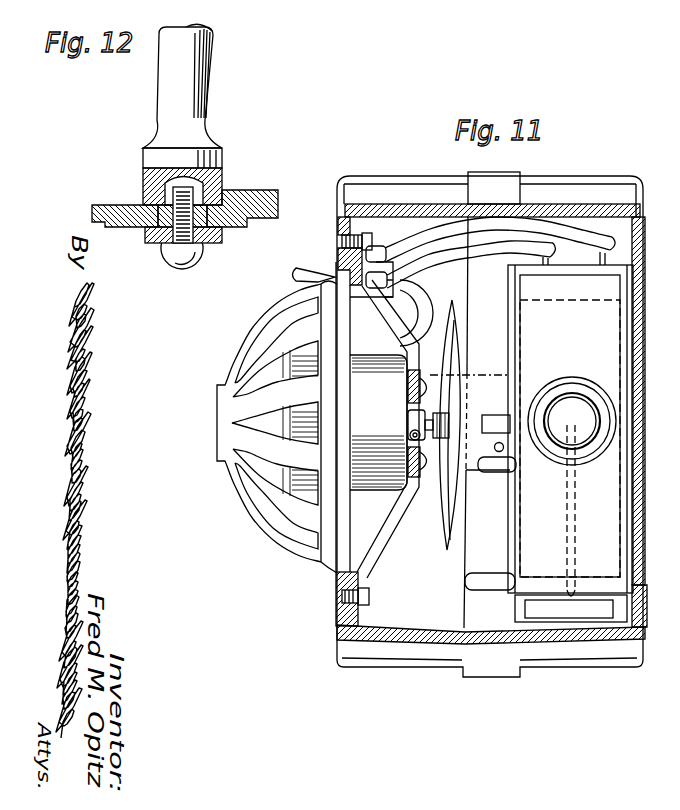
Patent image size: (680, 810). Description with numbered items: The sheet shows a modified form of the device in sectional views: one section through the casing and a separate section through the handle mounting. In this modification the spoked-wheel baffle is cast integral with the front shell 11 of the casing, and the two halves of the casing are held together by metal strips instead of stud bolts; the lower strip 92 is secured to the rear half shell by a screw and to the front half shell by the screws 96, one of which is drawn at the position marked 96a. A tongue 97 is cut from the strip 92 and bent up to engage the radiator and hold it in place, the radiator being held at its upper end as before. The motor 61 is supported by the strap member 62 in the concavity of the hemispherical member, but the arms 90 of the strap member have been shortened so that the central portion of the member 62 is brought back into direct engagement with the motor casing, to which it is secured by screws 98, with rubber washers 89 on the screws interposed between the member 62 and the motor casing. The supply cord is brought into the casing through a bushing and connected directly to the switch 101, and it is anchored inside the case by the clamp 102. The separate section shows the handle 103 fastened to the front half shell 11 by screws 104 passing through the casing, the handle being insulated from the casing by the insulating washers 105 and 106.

In FIG. 12, the front shell 11 is at (258, 190).
In FIG. 11, the motor 61 is at (400, 486).
In FIG. 11, the strap member 62 is at (410, 466).
In FIG. 11, the rubber washers 89 is at (422, 396).
In FIG. 11, the arms 90 is at (388, 538).
In FIG. 11, the lower strip 92 is at (486, 374).
In FIG. 11, the screws 96 is at (502, 451).
In FIG. 11, the slot 96a is at (491, 409).
In FIG. 11, the tongue 97 is at (520, 403).
In FIG. 11, the screws 98 is at (408, 386).
In FIG. 11, the switch 101 is at (340, 254).
In FIG. 11, the clamp 102 is at (392, 352).
In FIG. 12, the handle 103 is at (211, 76).
In FIG. 12, the screws 104 is at (168, 250).
In FIG. 12, the insulating washer 105 is at (217, 238).
In FIG. 12, the insulating washer 106 is at (143, 170).